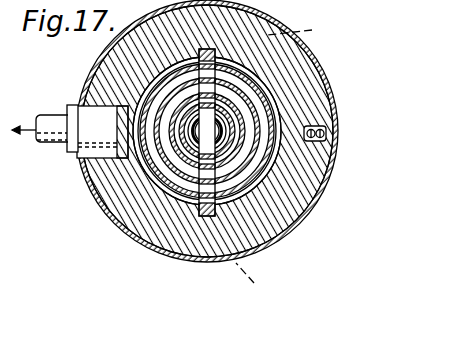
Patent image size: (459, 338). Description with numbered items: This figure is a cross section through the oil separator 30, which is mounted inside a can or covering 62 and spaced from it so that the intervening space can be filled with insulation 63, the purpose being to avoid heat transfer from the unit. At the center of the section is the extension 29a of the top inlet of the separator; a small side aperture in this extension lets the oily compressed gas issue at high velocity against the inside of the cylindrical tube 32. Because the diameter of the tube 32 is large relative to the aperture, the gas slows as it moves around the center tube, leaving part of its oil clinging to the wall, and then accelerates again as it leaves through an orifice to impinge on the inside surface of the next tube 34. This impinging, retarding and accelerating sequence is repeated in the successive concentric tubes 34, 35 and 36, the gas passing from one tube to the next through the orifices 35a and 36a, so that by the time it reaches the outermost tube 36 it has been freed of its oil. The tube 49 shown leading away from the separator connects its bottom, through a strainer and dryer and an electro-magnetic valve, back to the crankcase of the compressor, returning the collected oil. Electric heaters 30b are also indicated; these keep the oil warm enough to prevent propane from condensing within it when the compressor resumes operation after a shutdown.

The tube 49 is at (50, 118).
The orifice 35a is at (153, 131).
The electric heaters 30b is at (291, 156).
The insulation 63 is at (297, 58).
The can or covering 62 is at (327, 73).
The oil separator 30 is at (336, 90).
The extension of the inlet 29a is at (218, 121).
The orifice 36a is at (322, 145).
The tube 36 is at (285, 158).
The tube 35 is at (96, 180).
The cylindrical tube 32 is at (165, 190).
The tube 34 is at (160, 212).